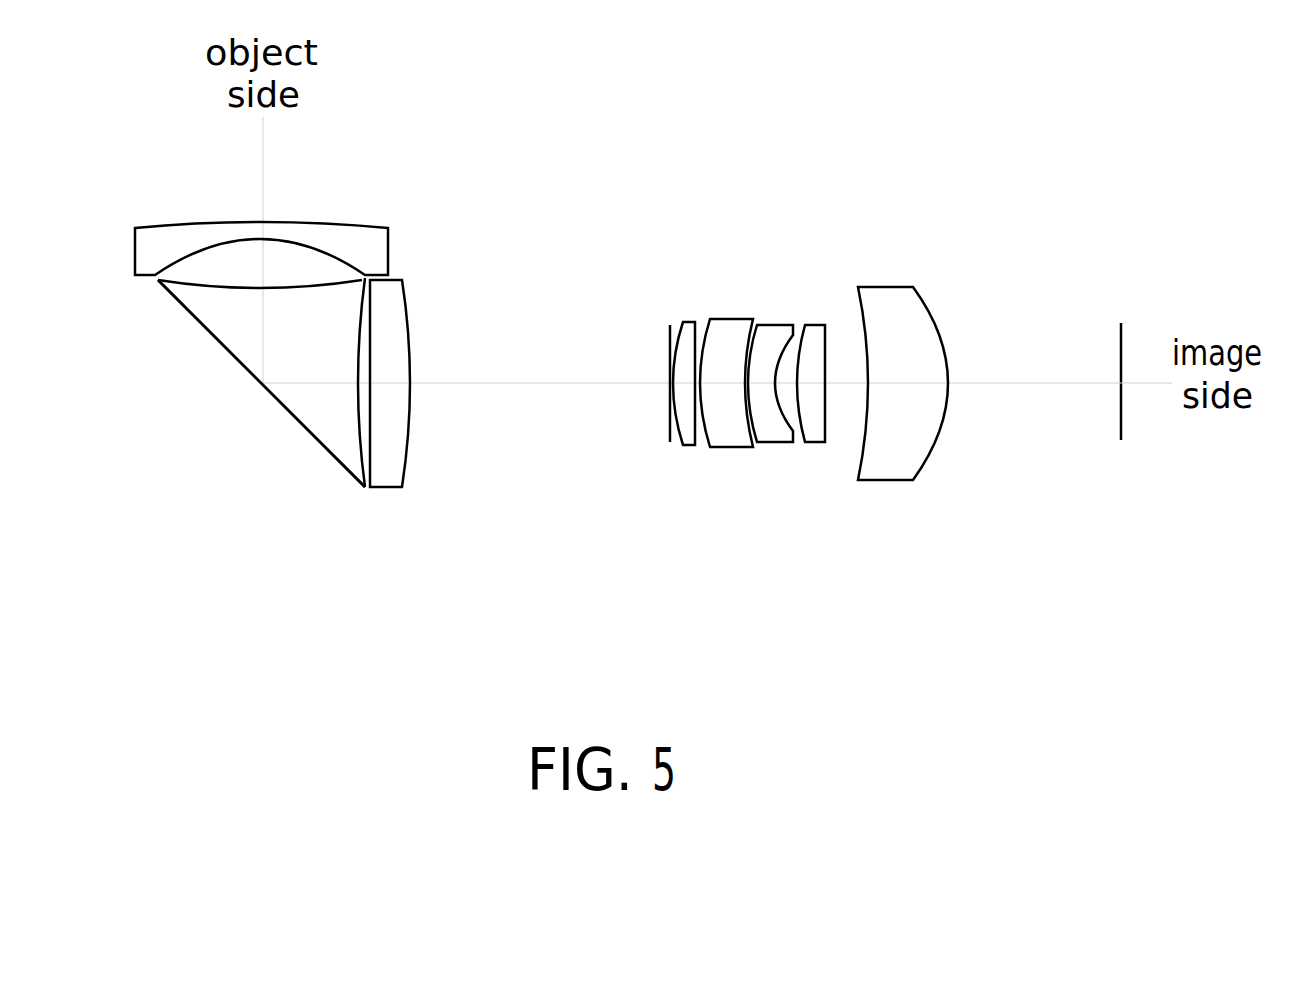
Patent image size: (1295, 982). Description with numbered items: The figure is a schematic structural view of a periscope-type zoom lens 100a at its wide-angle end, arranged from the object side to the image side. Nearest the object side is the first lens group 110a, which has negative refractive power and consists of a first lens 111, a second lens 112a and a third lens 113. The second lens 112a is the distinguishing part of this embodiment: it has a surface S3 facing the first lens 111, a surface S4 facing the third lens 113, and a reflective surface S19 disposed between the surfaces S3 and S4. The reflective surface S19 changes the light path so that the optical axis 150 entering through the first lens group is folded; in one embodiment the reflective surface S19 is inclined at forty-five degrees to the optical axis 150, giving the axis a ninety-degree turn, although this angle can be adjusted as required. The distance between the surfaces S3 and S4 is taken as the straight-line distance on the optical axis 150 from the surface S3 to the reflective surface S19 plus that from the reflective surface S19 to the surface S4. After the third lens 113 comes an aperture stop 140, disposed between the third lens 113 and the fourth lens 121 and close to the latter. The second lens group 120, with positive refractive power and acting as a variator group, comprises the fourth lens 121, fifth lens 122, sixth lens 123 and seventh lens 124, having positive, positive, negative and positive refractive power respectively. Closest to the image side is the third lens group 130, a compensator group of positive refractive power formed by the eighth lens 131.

The zoom lens 100a is at (1165, 710).
The optical axis 150 is at (262, 178).
The first lens group 110a is at (517, 98).
The first lens 111 is at (344, 230).
The second lens 112a is at (319, 308).
The third lens 113 is at (395, 337).
The surface S3 is at (248, 274).
The reflective surface S19 is at (288, 410).
The surface S4 is at (358, 437).
The aperture stop 140 is at (663, 328).
The second lens group 120 is at (843, 127).
The fourth lens 121 is at (687, 328).
The fifth lens 122 is at (730, 335).
The sixth lens 123 is at (768, 342).
The seventh lens 124 is at (811, 345).
The third lens group 130 is at (1013, 127).
The eighth lens 131 is at (895, 327).